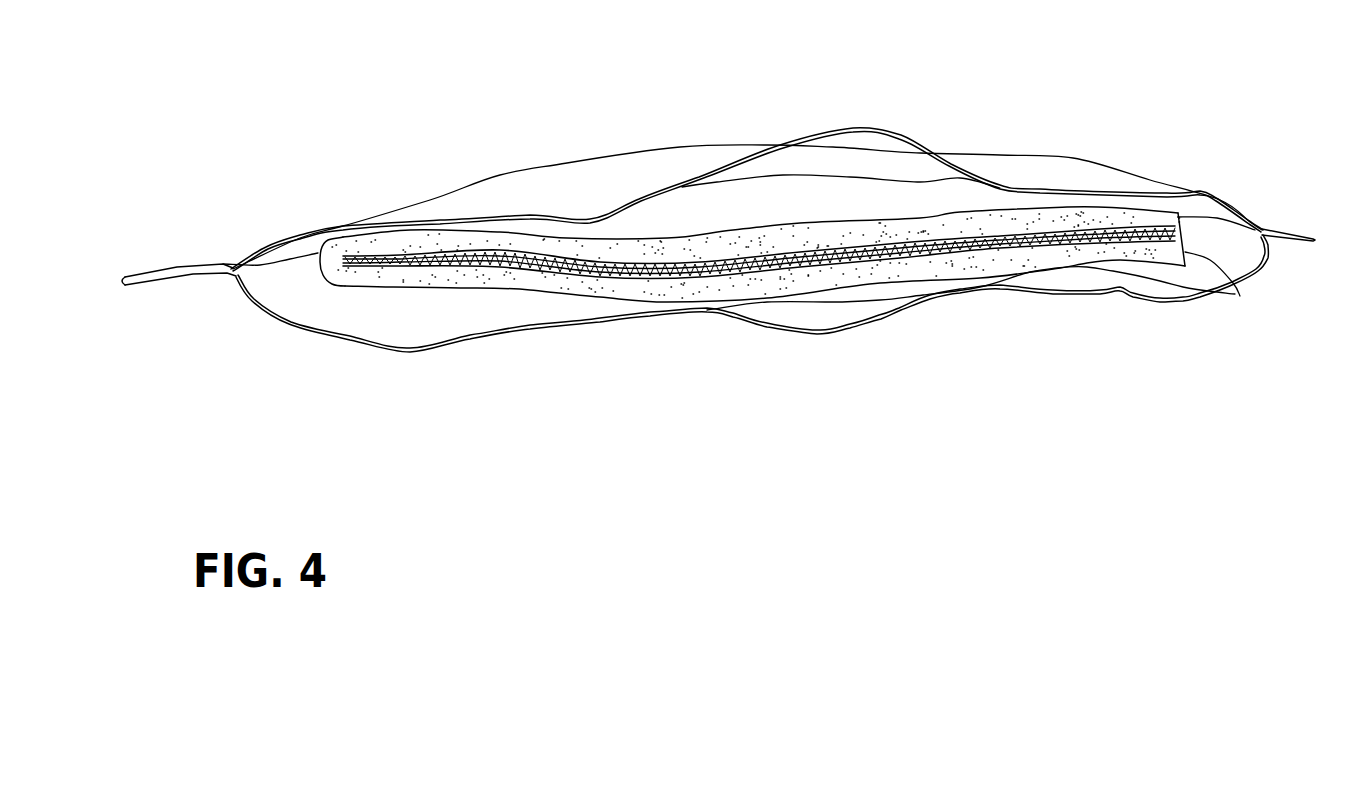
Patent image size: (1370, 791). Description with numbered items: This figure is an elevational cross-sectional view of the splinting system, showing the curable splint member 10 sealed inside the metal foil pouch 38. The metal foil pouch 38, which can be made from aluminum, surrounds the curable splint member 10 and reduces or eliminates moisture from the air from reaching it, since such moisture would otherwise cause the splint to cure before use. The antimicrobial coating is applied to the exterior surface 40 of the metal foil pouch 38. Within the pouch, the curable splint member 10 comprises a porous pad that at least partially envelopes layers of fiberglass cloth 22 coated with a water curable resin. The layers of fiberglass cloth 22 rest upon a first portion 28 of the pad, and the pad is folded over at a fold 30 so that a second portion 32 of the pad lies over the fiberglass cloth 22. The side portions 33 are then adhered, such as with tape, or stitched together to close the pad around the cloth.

The curable splint member 10 is at (606, 296).
The fiberglass cloth 22 is at (1050, 245).
The first portion of the pad 28 is at (967, 263).
The fold 30 is at (327, 260).
The second portion of the pad 32 is at (927, 227).
The side portions 33 is at (1182, 225).
The metal foil pouch 38 is at (527, 173).
The exterior surface of the metal foil pouch 40 is at (1010, 175).